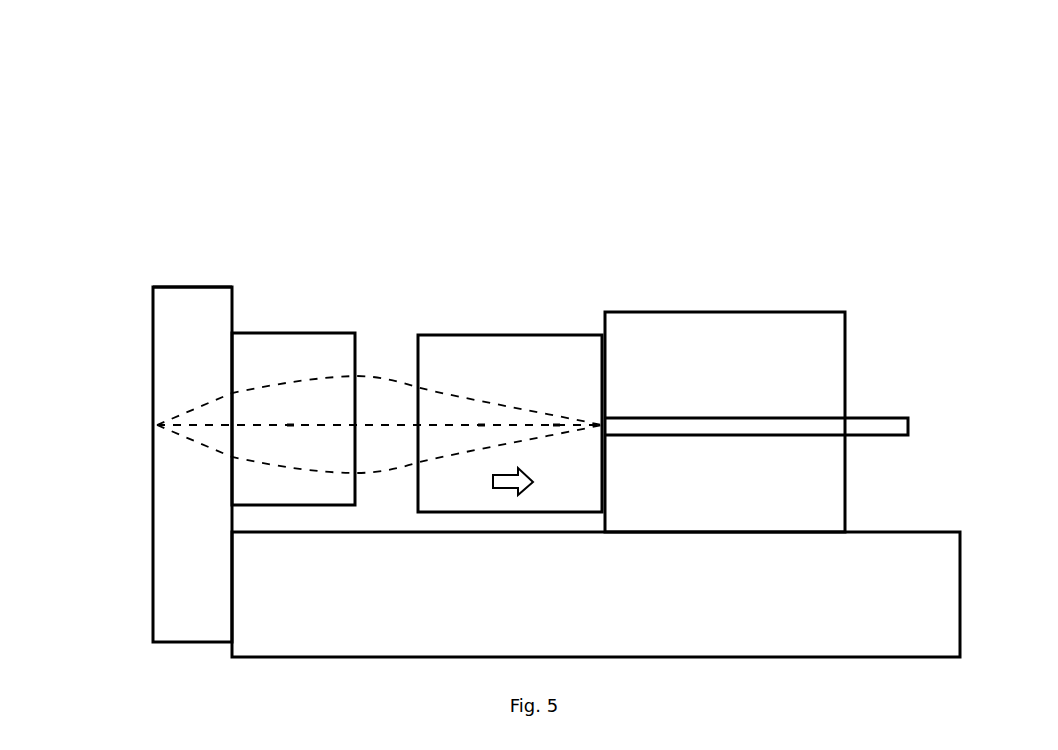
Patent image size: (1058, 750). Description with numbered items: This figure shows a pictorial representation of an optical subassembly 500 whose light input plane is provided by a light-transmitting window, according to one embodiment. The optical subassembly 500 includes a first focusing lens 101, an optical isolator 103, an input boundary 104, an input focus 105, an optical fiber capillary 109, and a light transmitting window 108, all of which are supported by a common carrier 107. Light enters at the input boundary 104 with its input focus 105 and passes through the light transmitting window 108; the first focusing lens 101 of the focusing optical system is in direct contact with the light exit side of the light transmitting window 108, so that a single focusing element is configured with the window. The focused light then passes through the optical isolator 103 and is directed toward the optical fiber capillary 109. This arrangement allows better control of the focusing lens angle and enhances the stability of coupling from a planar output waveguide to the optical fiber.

The optical subassembly 500 is at (132, 420).
The input boundary 104 is at (151, 290).
The light transmitting window 108 is at (181, 289).
The first focusing lens 101 is at (282, 334).
The optical isolator 103 is at (473, 335).
The input focus 105 is at (357, 424).
The carrier 107 is at (596, 594).
The optical fiber capillary 109 is at (702, 310).